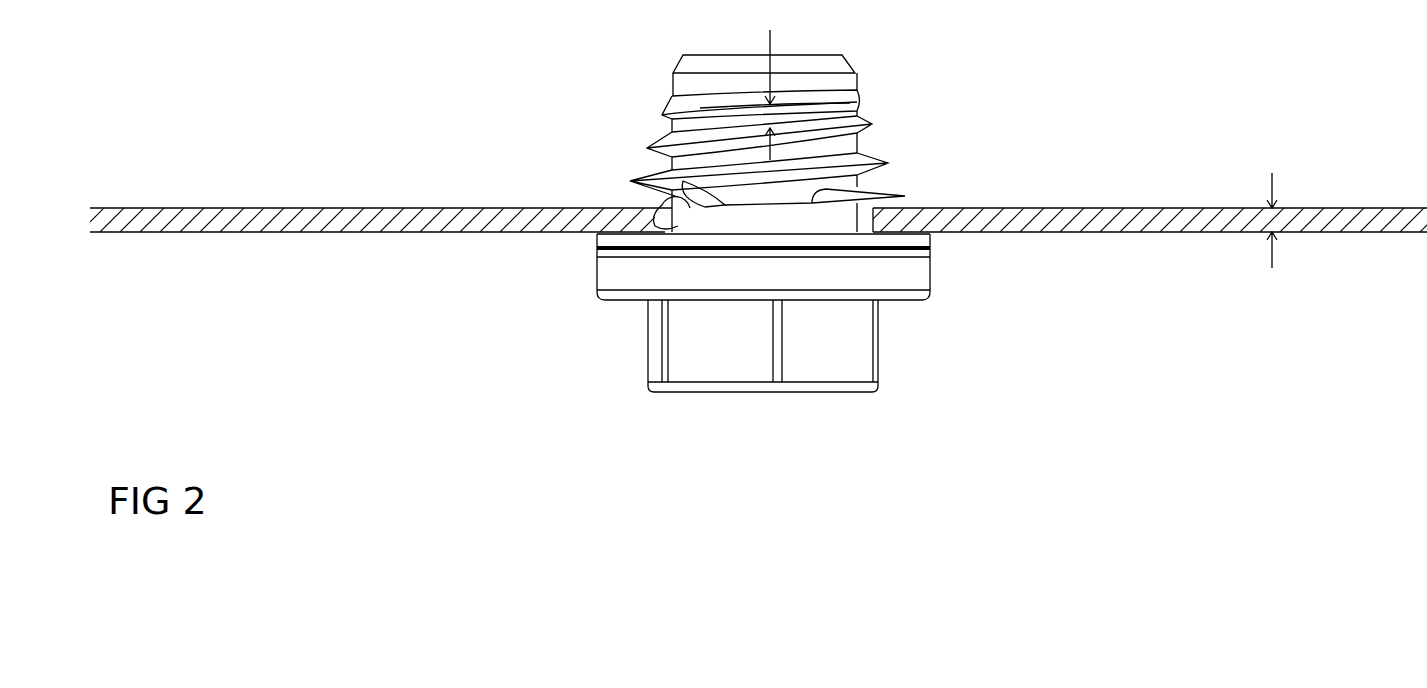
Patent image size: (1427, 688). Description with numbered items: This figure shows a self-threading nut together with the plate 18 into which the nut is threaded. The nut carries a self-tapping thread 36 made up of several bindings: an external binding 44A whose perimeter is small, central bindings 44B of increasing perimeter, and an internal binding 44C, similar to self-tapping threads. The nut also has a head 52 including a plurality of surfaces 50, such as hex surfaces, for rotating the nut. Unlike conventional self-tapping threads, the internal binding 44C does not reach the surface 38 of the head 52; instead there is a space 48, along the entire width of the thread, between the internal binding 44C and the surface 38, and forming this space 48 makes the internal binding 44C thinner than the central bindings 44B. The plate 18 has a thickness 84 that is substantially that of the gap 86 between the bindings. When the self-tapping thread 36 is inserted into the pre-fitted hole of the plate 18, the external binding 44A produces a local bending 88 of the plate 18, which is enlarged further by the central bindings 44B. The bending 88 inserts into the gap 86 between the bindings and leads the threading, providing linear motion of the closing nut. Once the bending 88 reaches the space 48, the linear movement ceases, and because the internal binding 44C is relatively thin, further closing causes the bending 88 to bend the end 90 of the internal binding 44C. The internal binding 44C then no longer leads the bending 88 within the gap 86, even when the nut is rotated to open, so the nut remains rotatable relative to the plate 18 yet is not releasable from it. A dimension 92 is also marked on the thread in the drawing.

The plate 18 is at (1150, 222).
The self-tapping thread 36 is at (589, 115).
The surface of head 38 is at (933, 233).
The external binding 44A is at (837, 98).
The central bindings 44B is at (887, 160).
The internal binding 44C is at (900, 188).
The space 48 is at (760, 220).
The surfaces 50 is at (833, 343).
The head 52 is at (956, 275).
The thickness 84 is at (1289, 219).
The gap 86 is at (830, 113).
The local bending 88 is at (675, 208).
The end of the internal binding 90 is at (672, 197).
The thread pitch 92 is at (769, 47).